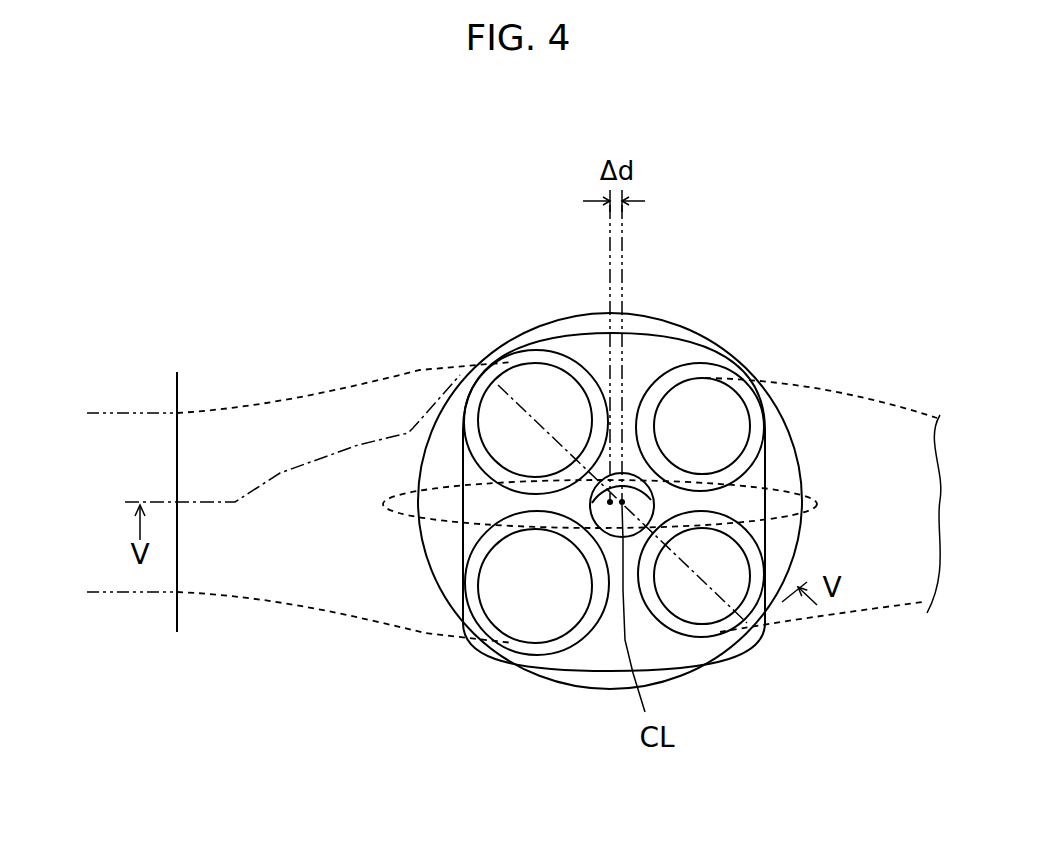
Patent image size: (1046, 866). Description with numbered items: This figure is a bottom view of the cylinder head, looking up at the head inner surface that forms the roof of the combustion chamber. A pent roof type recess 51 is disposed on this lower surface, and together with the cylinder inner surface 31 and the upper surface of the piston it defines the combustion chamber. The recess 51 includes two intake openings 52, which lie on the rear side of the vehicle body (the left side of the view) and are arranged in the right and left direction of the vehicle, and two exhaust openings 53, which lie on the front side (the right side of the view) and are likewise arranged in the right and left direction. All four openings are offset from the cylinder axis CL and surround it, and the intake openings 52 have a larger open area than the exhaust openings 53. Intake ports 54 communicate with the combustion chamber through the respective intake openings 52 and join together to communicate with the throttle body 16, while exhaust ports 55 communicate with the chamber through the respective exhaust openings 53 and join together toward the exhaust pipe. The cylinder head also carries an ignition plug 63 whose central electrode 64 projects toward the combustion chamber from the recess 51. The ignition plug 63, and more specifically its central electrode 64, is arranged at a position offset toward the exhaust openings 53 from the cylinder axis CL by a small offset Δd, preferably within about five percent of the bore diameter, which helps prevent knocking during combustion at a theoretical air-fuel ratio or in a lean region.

The throttle body 16 is at (135, 413).
The cylinder inner surface 31 is at (693, 331).
The recess 51 is at (603, 672).
The intake openings 52 is at (546, 363).
The exhaust openings 53 is at (710, 378).
The intake ports 54 is at (420, 370).
The exhaust ports 55 is at (858, 393).
The ignition plug 63 is at (597, 520).
The central electrode 64 is at (622, 500).